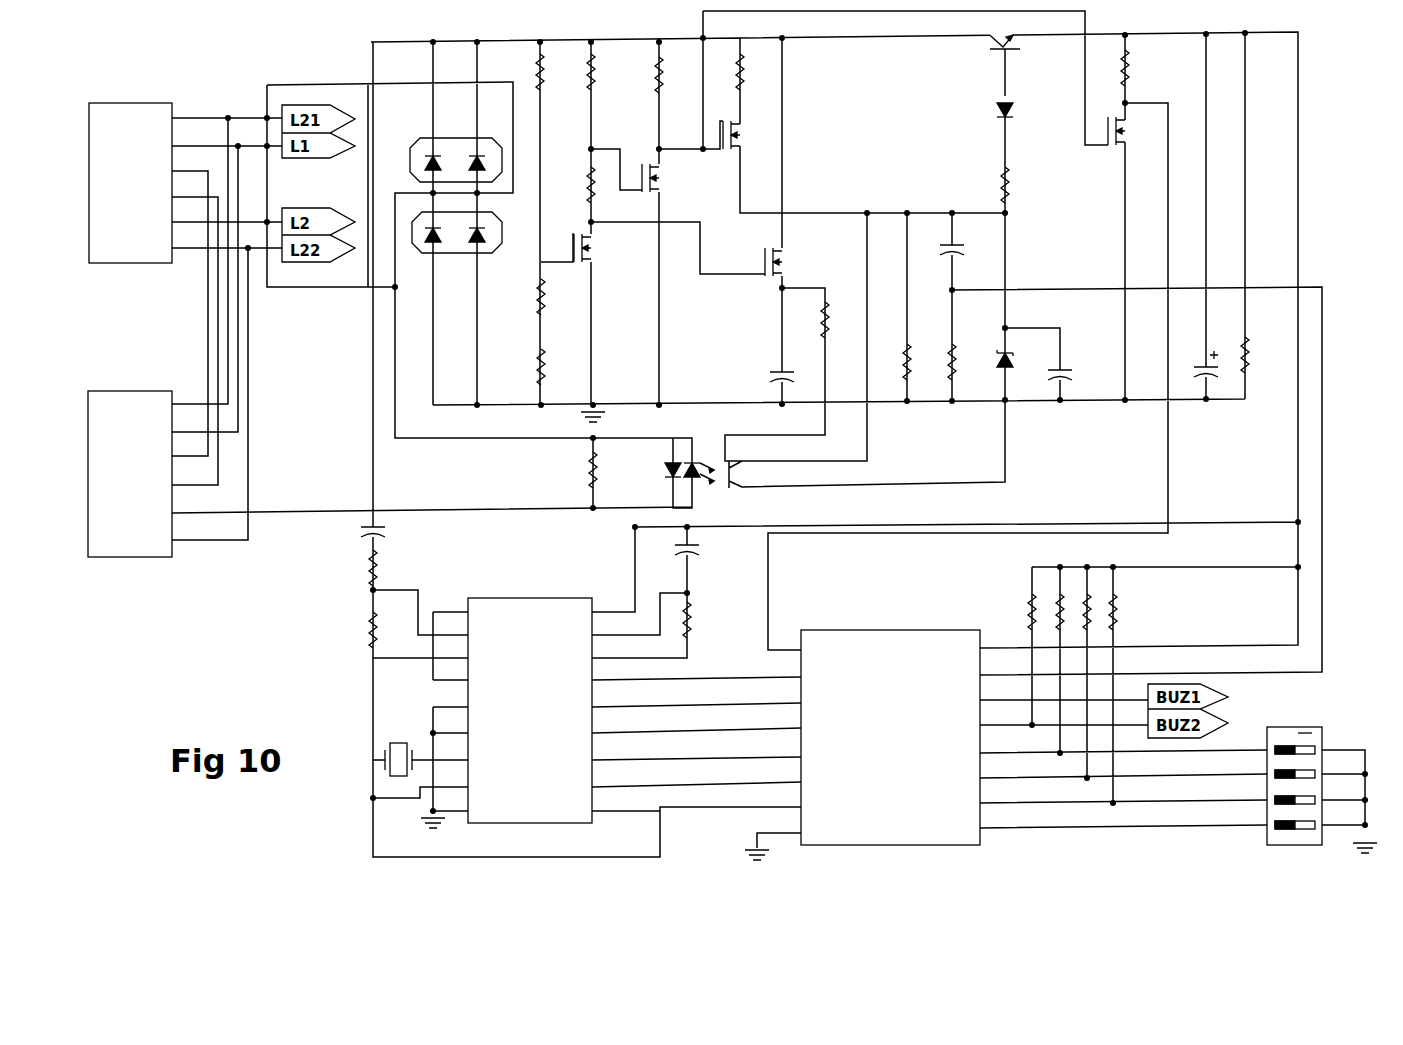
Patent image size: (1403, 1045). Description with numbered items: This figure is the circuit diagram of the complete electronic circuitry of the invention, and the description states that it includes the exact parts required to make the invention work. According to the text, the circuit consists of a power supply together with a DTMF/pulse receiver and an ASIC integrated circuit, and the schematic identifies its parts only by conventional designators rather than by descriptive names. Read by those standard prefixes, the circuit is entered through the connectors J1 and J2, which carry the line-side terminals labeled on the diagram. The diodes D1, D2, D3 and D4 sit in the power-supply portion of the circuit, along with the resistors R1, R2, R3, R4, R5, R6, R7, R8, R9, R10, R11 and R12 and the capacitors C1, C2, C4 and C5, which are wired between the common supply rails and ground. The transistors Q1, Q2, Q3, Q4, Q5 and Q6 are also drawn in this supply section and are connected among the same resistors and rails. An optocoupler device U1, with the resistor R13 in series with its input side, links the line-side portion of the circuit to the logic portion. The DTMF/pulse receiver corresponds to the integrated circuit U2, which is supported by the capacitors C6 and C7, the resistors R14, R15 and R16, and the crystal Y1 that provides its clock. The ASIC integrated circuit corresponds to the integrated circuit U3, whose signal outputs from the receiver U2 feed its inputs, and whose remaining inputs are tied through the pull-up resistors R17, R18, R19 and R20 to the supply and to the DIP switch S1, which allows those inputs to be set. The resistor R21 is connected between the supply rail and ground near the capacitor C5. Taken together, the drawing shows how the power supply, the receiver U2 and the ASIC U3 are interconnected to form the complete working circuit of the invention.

The connector CON6-BKJ J1 is at (147, 185).
The connector CON6-BKJ J2 is at (130, 476).
The diode BAV23 D1 is at (440, 136).
The diode BAV23 D2 is at (474, 250).
The zener diode PLVA650A D3 is at (1045, 396).
The diode BAS616 D4 is at (1037, 112).
The resistor 10M R1 is at (560, 70).
The resistor 3M R2 is at (556, 297).
The resistor 820K R3 is at (565, 364).
The resistor 10M R4 is at (611, 70).
The resistor 820K R5 is at (571, 185).
The resistor 10M R6 is at (679, 75).
The resistor 47K R7 is at (759, 70).
The resistor 100K R8 is at (845, 322).
The resistor 300K R9 is at (907, 400).
The resistor 1M R10 is at (953, 400).
The resistor R11 is at (988, 184).
The resistor 47K R12 is at (1144, 67).
The resistor 100 R13 is at (610, 471).
The resistor 100K R14 is at (396, 566).
The resistor 100K R15 is at (348, 628).
The resistor 750K R16 is at (711, 618).
The resistor 300K R17 is at (1006, 606).
The resistor 300K R18 is at (1053, 594).
The resistor 300K R19 is at (1084, 594).
The resistor 300K R20 is at (1139, 607).
The resistor 47K R21 is at (1263, 352).
The capacitor 4.7MF C1 is at (756, 370).
The capacitor 100nF C2 is at (973, 259).
The capacitor 1.0MF C4 is at (1083, 353).
The capacitor 100MF C5 is at (1218, 387).
The capacitor 10nF C6 is at (350, 527).
The capacitor 100nF C7 is at (711, 553).
The MOSFET PHBF170 Q1 is at (624, 261).
The MOSFET PHBF170 Q2 is at (661, 119).
The MOSFET PHBF107 Q3 is at (691, 172).
The MOSFET PHBF107 Q4 is at (746, 278).
The transistor PMBTA42 Q5 is at (972, 60).
The MOSFET PHBF107 Q6 is at (1089, 151).
The optocoupler TLP130 U1 is at (706, 460).
The IC VA-528106M U2 is at (537, 713).
The IC BK1956 U3 is at (891, 738).
The crystal 3.579MHz Y1 is at (361, 748).
The DIP switch SM DIP-04 S1 is at (1299, 788).